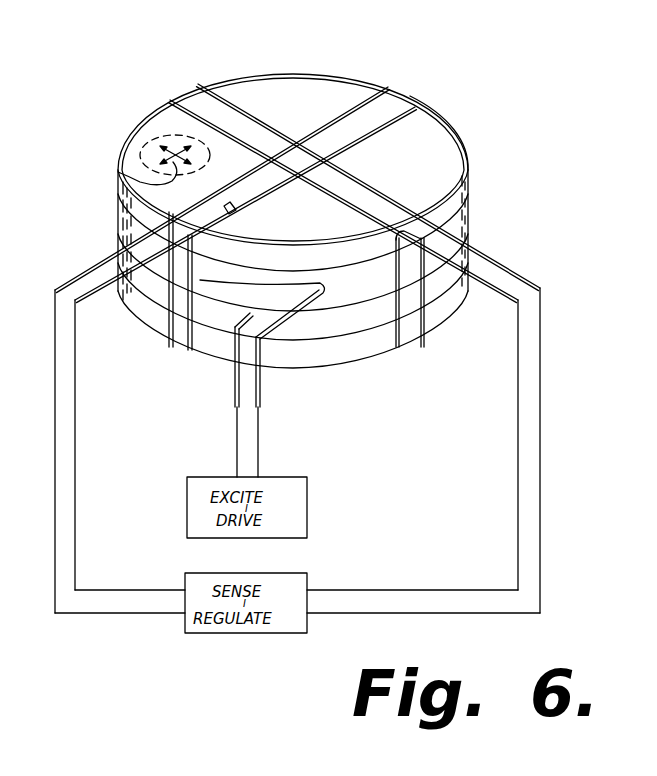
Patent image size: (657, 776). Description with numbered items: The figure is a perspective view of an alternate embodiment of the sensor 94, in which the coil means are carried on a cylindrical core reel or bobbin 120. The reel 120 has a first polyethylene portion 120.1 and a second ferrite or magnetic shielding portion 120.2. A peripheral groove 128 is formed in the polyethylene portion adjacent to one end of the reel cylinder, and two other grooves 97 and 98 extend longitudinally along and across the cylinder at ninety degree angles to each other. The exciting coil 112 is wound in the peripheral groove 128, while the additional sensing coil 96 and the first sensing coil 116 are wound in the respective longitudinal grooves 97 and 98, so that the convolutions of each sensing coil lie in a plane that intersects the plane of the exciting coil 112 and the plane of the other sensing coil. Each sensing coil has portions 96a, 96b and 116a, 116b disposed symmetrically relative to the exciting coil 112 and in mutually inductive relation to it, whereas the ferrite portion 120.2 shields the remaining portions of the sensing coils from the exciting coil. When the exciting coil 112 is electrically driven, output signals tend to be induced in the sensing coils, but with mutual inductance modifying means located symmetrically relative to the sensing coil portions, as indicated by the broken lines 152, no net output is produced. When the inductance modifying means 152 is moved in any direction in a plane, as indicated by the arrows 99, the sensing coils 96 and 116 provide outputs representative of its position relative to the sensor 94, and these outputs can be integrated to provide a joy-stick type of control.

The sensor 94 is at (490, 86).
The additional sensing coil 96 is at (176, 102).
The sensing coil portion 96a is at (222, 106).
The sensing coil portion 96b is at (356, 186).
The longitudinal groove 97 is at (392, 348).
The longitudinal groove 98 is at (231, 209).
The arrows 99 is at (118, 172).
The exciting coil 112 is at (348, 297).
The first sensing coil 116 is at (396, 88).
The sensing coil portion 116a is at (243, 178).
The sensing coil portion 116b is at (364, 110).
The cylindrical core reel 120 is at (467, 147).
The first polyethylene portion 120.1 is at (460, 172).
The second ferrite portion 120.2 is at (446, 320).
The peripheral groove 128 is at (315, 312).
The mutual inductance modifying means 152 is at (140, 142).